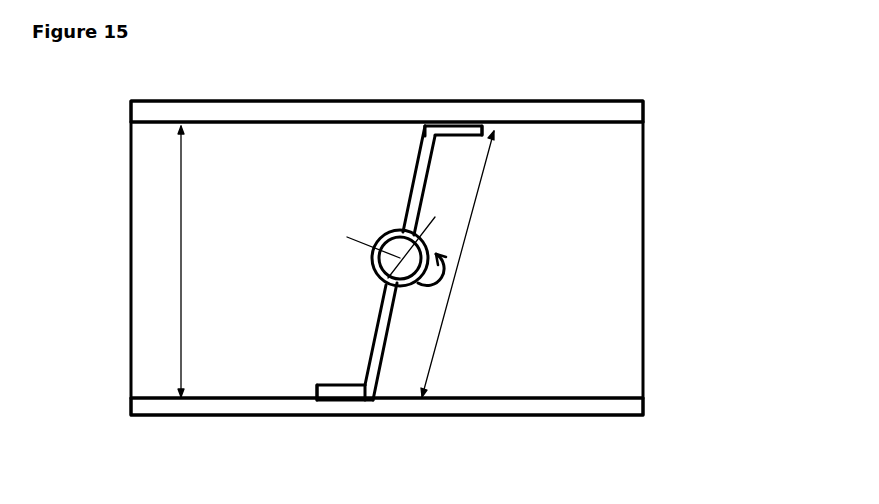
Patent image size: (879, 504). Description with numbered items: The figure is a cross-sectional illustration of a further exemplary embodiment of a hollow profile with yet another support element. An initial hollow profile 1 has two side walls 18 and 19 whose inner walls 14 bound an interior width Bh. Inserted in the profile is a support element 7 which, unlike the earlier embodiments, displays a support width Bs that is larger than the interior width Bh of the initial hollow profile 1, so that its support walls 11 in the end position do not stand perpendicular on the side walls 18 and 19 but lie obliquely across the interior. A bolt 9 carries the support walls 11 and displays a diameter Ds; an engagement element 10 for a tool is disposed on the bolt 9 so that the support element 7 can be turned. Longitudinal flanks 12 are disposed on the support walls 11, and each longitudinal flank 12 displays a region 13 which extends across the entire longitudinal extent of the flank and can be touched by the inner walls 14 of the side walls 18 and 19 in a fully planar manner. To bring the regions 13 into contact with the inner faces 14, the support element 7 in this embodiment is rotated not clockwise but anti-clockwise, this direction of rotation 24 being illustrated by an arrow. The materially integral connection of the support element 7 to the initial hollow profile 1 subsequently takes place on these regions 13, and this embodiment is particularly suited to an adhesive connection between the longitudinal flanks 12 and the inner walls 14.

The initial hollow profile 1 is at (661, 58).
The support element 7 is at (275, 214).
The bolt 9 is at (372, 267).
The engagement element 10 is at (421, 233).
The support walls 11 is at (417, 183).
The longitudinal flanks 12 is at (462, 124).
The region 13 is at (427, 125).
The inner walls 14 is at (325, 135).
The side wall 18 is at (223, 410).
The side wall 19 is at (280, 107).
The direction of rotation 24 is at (443, 293).